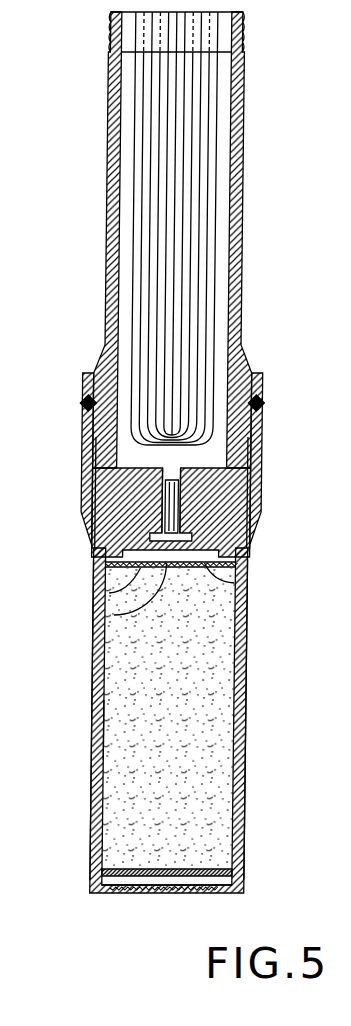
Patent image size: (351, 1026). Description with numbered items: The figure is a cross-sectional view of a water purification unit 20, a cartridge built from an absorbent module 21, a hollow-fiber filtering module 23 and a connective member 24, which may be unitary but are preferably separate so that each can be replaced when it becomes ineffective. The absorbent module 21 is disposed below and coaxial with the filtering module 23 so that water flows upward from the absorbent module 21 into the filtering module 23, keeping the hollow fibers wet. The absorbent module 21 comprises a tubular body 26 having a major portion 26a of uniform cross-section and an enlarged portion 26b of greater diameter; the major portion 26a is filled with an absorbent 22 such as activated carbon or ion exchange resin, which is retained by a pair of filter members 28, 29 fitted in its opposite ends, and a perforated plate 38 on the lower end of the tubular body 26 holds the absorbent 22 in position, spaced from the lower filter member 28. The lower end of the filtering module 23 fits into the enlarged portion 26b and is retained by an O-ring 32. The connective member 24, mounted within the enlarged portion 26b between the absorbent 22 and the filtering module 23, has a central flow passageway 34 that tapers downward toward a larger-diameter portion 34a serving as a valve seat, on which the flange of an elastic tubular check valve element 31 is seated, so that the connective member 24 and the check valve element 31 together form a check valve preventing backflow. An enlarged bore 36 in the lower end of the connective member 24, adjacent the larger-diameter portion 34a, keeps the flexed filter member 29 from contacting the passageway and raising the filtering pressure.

The water purification unit 20 is at (253, 207).
The hollow-fiber filtering module 23 is at (242, 323).
The enlarged portion 26b is at (267, 448).
The O-ring 32 is at (95, 411).
The connective member 24 is at (106, 480).
The flow passageway 34 is at (196, 480).
The check valve element 31 is at (169, 508).
The tubular body 26 is at (257, 748).
The major portion 26a is at (257, 643).
The absorbent module 21 is at (256, 701).
The filter member 29 is at (244, 566).
The absorbent 22 is at (224, 797).
The enlarged bore 36 is at (132, 592).
The larger-diameter portion 34a is at (112, 622).
The perforated plate 38 is at (162, 877).
The filter member 28 is at (192, 888).